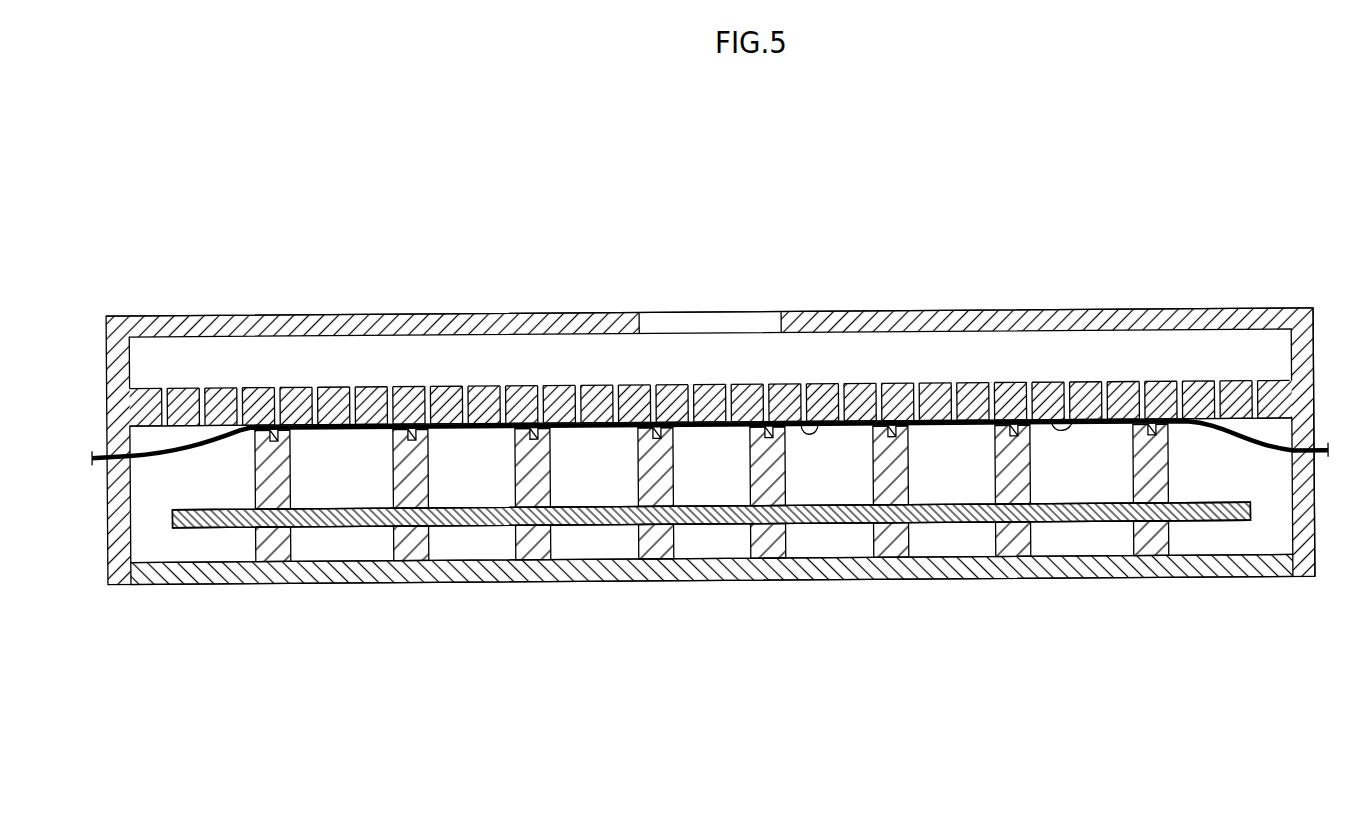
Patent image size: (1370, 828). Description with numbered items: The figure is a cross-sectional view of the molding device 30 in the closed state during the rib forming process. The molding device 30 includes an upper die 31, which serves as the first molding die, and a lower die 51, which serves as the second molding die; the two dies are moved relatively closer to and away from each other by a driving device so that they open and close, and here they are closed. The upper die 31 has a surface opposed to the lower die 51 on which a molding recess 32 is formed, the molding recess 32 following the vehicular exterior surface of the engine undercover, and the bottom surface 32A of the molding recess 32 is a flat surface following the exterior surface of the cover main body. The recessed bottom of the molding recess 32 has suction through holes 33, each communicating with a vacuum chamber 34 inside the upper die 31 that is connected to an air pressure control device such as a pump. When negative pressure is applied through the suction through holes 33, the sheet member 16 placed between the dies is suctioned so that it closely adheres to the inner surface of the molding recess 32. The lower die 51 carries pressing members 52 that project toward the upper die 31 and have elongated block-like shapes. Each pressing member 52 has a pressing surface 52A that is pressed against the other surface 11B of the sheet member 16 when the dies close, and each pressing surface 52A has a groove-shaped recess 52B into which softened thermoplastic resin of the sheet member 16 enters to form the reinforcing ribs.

The molding device 30 is at (142, 269).
The upper die 31 is at (223, 322).
The molding recess 32 is at (1281, 433).
The bottom surface of the molding recess 32A is at (1073, 420).
The suction through holes 33 is at (356, 397).
The vacuum chamber 34 is at (1067, 346).
The lower die 51 is at (214, 582).
The pressing members 52 is at (648, 470).
The pressing surface 52A is at (660, 432).
The recess 52B is at (653, 430).
The other surface of the sheet member 11B is at (818, 424).
The sheet member 16 is at (1273, 469).